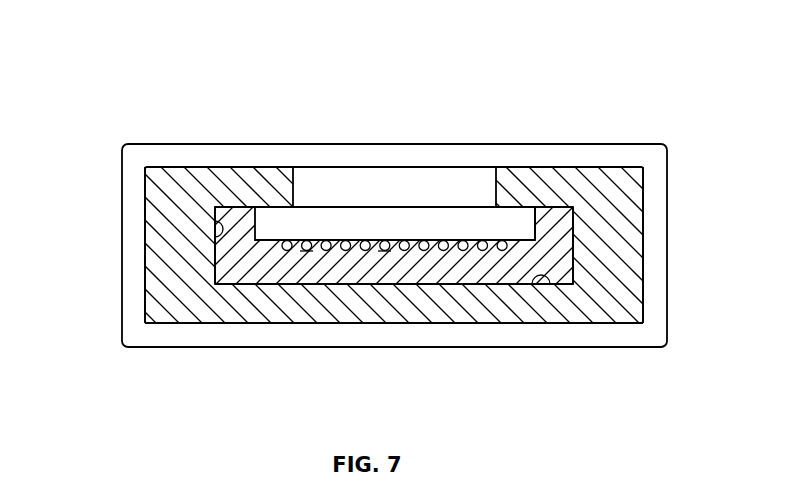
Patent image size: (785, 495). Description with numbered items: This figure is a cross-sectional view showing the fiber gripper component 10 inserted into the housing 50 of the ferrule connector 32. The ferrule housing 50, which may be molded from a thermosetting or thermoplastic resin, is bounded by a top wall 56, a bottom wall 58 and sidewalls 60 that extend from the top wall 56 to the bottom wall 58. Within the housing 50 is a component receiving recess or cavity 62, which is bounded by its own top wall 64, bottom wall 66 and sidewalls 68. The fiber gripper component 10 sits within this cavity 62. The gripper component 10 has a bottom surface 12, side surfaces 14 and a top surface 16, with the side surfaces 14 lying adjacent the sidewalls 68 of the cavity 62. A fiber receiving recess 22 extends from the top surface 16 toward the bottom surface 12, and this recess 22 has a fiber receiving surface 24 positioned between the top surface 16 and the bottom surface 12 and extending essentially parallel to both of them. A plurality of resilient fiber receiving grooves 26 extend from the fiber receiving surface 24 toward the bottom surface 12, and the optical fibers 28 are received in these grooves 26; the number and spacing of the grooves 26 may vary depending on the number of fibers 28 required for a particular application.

The fiber gripper component 10 is at (578, 227).
The bottom surface 12 is at (487, 285).
The side surfaces 14 is at (215, 263).
The top surface 16 is at (241, 207).
The fiber receiving recess 22 is at (520, 223).
The fiber receiving surface 24 is at (270, 240).
The fiber receiving grooves 26 is at (383, 247).
The optical fibers 28 is at (327, 243).
The ferrule connector 32 is at (659, 96).
The ferrule housing 50 is at (623, 307).
The top wall 56 is at (225, 167).
The bottom wall 58 is at (213, 323).
The sidewalls 60 is at (145, 206).
The component receiving cavity 62 is at (403, 222).
The top wall of cavity 64 is at (449, 206).
The bottom wall of cavity 66 is at (535, 262).
The sidewalls of cavity 68 is at (217, 236).